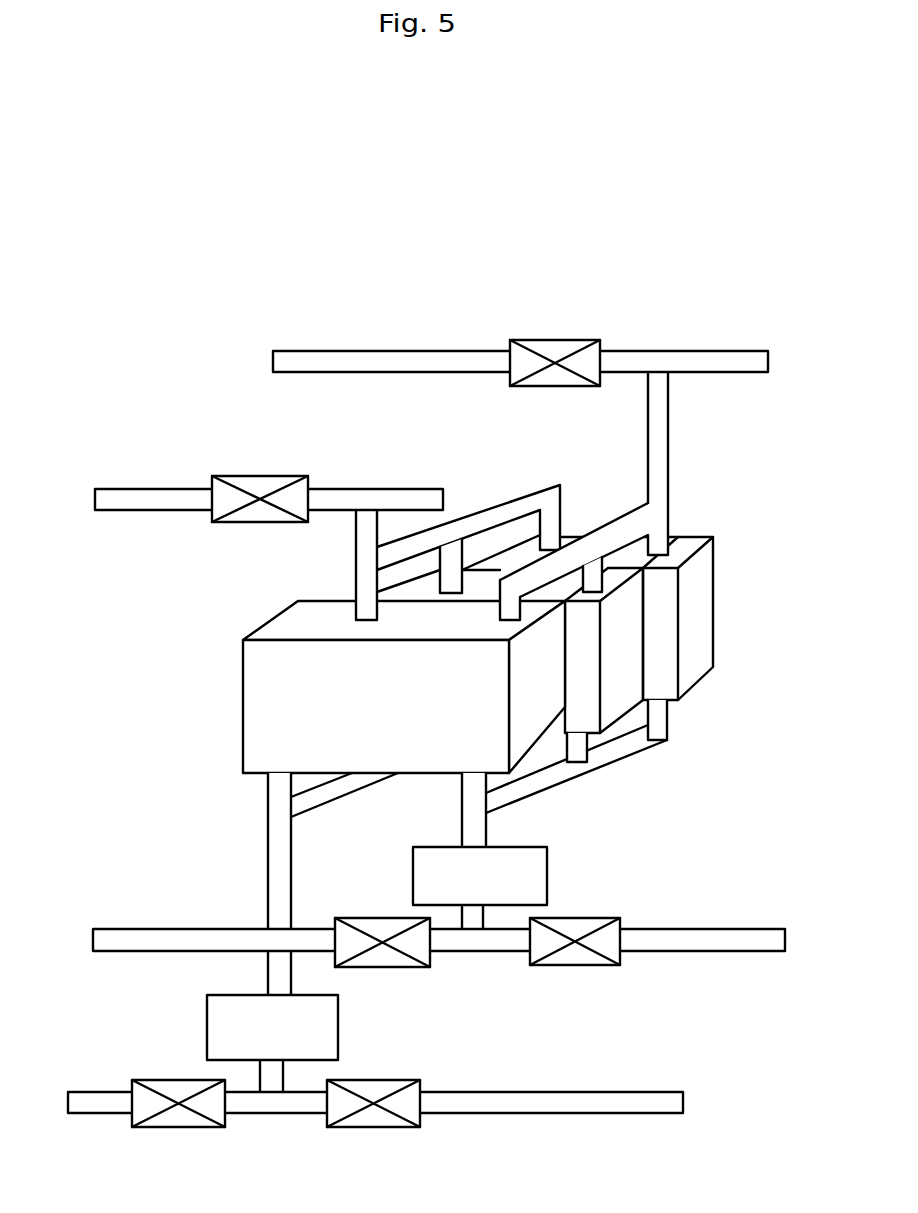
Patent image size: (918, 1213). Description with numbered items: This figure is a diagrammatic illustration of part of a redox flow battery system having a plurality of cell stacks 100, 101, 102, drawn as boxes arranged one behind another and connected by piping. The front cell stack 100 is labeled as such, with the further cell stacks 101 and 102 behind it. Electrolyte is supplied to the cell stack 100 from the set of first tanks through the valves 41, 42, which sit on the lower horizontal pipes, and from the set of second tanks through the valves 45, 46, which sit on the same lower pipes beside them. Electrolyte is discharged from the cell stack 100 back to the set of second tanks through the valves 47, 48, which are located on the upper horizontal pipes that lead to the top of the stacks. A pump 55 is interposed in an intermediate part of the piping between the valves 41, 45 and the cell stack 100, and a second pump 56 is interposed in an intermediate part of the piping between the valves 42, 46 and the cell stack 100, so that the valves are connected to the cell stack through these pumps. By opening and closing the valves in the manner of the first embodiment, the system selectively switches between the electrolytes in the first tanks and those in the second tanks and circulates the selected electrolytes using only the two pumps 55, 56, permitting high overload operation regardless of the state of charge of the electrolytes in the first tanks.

The valve 41 is at (374, 1127).
The valve 42 is at (588, 965).
The valve 45 is at (176, 1127).
The valve 46 is at (395, 967).
The valve 47 is at (267, 474).
The valve 48 is at (548, 340).
The pump 55 is at (207, 1023).
The pump 56 is at (547, 872).
The cell stack 100 is at (243, 697).
The cell stack 101 is at (623, 718).
The cell stack 102 is at (700, 592).